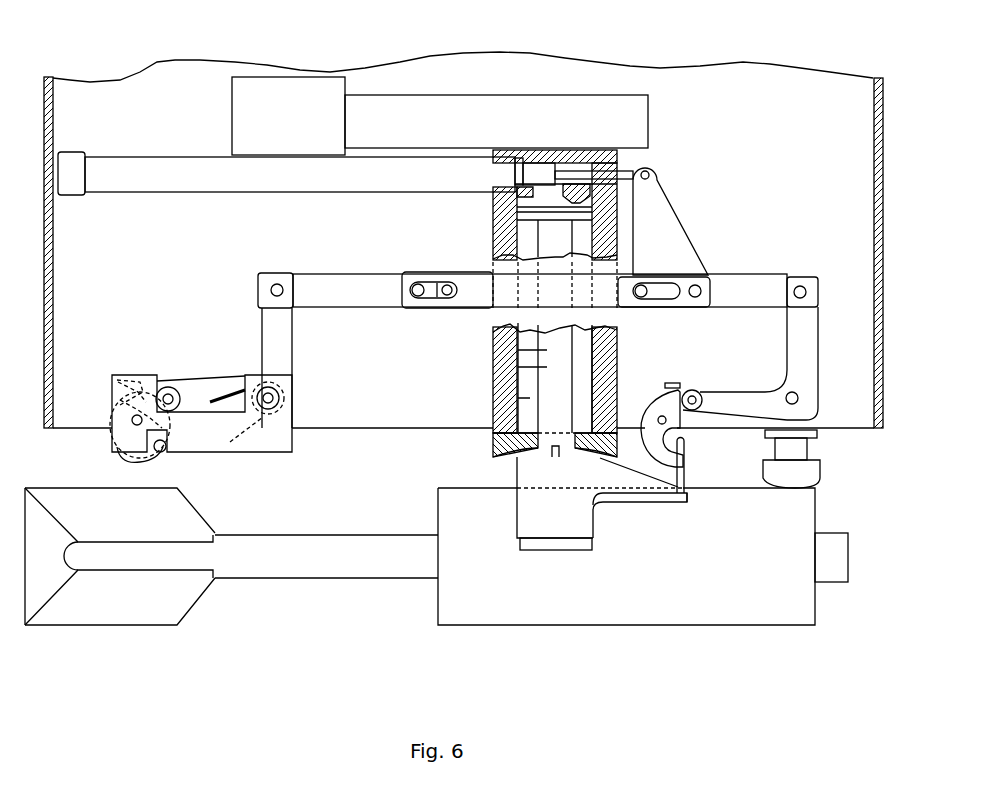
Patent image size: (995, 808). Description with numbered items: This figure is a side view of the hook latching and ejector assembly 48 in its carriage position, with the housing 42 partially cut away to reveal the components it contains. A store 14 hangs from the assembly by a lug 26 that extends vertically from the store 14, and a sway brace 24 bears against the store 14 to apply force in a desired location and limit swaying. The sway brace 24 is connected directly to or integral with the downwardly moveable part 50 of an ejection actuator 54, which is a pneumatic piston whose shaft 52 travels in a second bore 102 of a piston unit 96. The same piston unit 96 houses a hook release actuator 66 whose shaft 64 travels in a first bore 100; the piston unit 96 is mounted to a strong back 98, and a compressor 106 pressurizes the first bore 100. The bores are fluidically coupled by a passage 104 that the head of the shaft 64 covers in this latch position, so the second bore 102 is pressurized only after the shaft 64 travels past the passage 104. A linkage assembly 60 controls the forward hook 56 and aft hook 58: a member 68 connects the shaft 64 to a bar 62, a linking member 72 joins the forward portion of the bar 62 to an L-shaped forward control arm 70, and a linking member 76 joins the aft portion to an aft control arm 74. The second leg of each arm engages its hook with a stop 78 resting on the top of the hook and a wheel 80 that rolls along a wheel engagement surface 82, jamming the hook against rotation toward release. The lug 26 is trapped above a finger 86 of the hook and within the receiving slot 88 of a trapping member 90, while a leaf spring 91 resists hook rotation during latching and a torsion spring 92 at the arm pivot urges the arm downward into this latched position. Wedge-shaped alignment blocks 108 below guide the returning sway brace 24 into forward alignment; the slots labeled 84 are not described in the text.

The store 14 is at (780, 598).
The sway brace 24 is at (553, 523).
The lug 26 is at (680, 467).
The housing 42 is at (835, 100).
The hook latching and ejector assembly 48 is at (745, 93).
The downwardly moveable part 50 is at (520, 368).
The shaft 52 is at (528, 399).
The ejection actuator 54 is at (510, 332).
The forward hook 56 is at (653, 438).
The aft hook 58 is at (140, 460).
The linkage assembly 60 is at (722, 226).
The bar 62 is at (482, 273).
The shaft 64 is at (543, 170).
The hook release actuator 66 is at (533, 148).
The member 68 is at (655, 215).
The forward hook control member (arm) 70 is at (803, 350).
The linking member 72 is at (768, 277).
The aft hook control member (arm) 74 is at (277, 342).
The linking member 76 is at (350, 290).
The stop 78 is at (670, 385).
The wheel 80 is at (697, 397).
The wheel engagement surface 82 is at (687, 415).
The slot 84 is at (445, 295).
The finger 86 is at (688, 447).
The receiving slot 88 is at (163, 457).
The trapping member 90 is at (137, 375).
The leaf spring 91 is at (113, 372).
The torsion spring 92 is at (263, 372).
The piston unit 96 is at (493, 198).
The strong back 98 is at (612, 117).
The first bore 100 is at (568, 170).
The second bore 102 is at (497, 410).
The passage 104 is at (547, 192).
The compressor 106 is at (272, 107).
The alignment blocks 108 is at (493, 457).